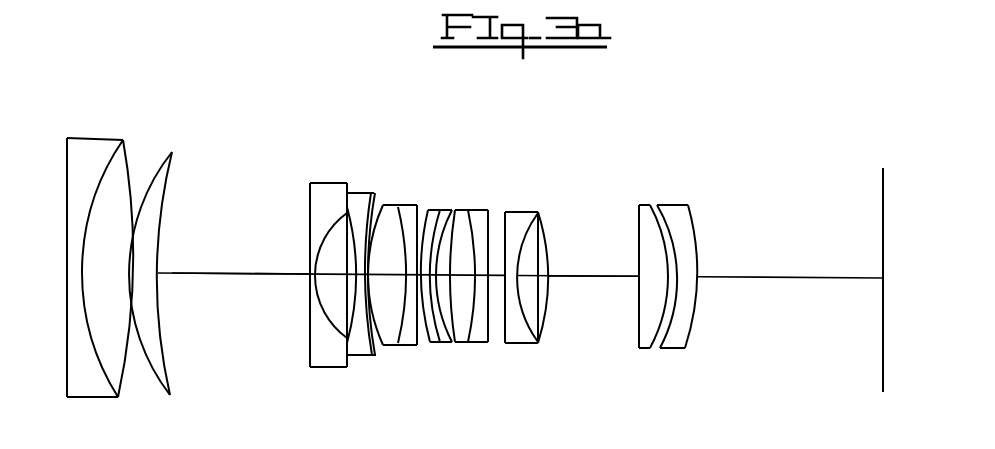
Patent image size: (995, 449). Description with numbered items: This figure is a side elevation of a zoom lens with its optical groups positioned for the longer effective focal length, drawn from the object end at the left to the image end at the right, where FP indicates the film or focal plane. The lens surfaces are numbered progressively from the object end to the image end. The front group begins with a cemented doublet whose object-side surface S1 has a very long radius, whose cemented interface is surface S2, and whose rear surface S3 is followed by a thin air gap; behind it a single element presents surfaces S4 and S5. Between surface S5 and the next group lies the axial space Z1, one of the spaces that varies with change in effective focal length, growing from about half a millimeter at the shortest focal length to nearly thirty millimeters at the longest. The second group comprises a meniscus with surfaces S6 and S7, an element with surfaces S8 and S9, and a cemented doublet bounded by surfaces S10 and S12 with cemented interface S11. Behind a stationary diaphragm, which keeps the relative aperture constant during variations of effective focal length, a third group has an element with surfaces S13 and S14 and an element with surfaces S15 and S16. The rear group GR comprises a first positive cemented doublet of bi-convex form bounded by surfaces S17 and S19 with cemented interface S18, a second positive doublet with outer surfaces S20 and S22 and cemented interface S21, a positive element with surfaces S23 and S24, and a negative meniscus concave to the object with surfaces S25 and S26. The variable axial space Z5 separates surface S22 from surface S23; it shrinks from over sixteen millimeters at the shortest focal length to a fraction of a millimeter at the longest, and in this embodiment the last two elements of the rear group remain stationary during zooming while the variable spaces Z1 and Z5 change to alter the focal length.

The lens surface S1 is at (67, 158).
The lens surface S2 is at (84, 222).
The lens surface S3 is at (127, 160).
The lens surface S4 is at (156, 165).
The lens surface S5 is at (160, 227).
The lens surface S6 is at (308, 205).
The lens surface S7 is at (318, 247).
The lens surface S8 is at (353, 295).
The lens surface S9 is at (368, 202).
The lens surface S10 is at (363, 347).
The lens surface S11 is at (387, 206).
The lens surface S12 is at (410, 212).
The lens surface S13 is at (414, 346).
The lens surface S14 is at (431, 211).
The lens surface S15 is at (442, 212).
The lens surface S16 is at (454, 212).
The lens surface S17 is at (457, 343).
The lens surface S18 is at (471, 344).
The lens surface S19 is at (489, 343).
The lens surface S20 is at (508, 230).
The lens surface S21 is at (538, 238).
The lens surface S22 is at (548, 265).
The lens surface S23 is at (639, 218).
The lens surface S24 is at (652, 204).
The lens surface S25 is at (676, 238).
The lens surface S26 is at (695, 255).
The variable axial space Z1 is at (232, 274).
The variable axial space Z5 is at (604, 278).
The focal plane FP is at (883, 237).